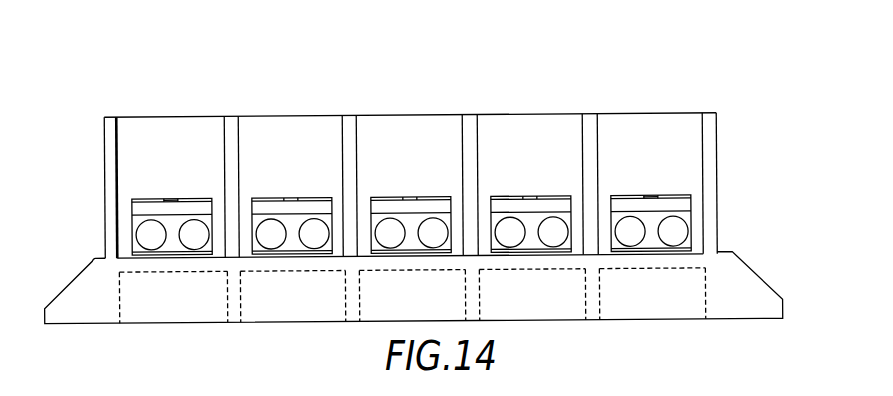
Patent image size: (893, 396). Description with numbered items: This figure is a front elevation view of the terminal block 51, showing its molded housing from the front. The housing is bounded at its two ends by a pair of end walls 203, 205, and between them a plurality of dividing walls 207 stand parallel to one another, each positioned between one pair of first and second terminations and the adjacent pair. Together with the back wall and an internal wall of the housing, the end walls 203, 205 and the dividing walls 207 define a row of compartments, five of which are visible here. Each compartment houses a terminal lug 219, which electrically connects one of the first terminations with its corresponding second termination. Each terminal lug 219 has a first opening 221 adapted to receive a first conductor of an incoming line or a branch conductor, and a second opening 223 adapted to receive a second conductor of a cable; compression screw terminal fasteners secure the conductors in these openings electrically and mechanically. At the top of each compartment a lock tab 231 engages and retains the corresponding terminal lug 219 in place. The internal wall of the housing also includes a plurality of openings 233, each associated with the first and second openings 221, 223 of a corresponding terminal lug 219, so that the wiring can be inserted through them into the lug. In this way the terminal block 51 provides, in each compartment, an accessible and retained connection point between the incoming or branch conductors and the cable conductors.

The terminal block 51 is at (268, 362).
The end wall 203 is at (717, 160).
The end wall 205 is at (104, 175).
The dividing walls 207 is at (233, 119).
The terminal lug 219 is at (414, 233).
The first opening 221 is at (672, 228).
The second opening 223 is at (627, 228).
The lock tab 231 is at (176, 199).
The openings 233 is at (670, 196).